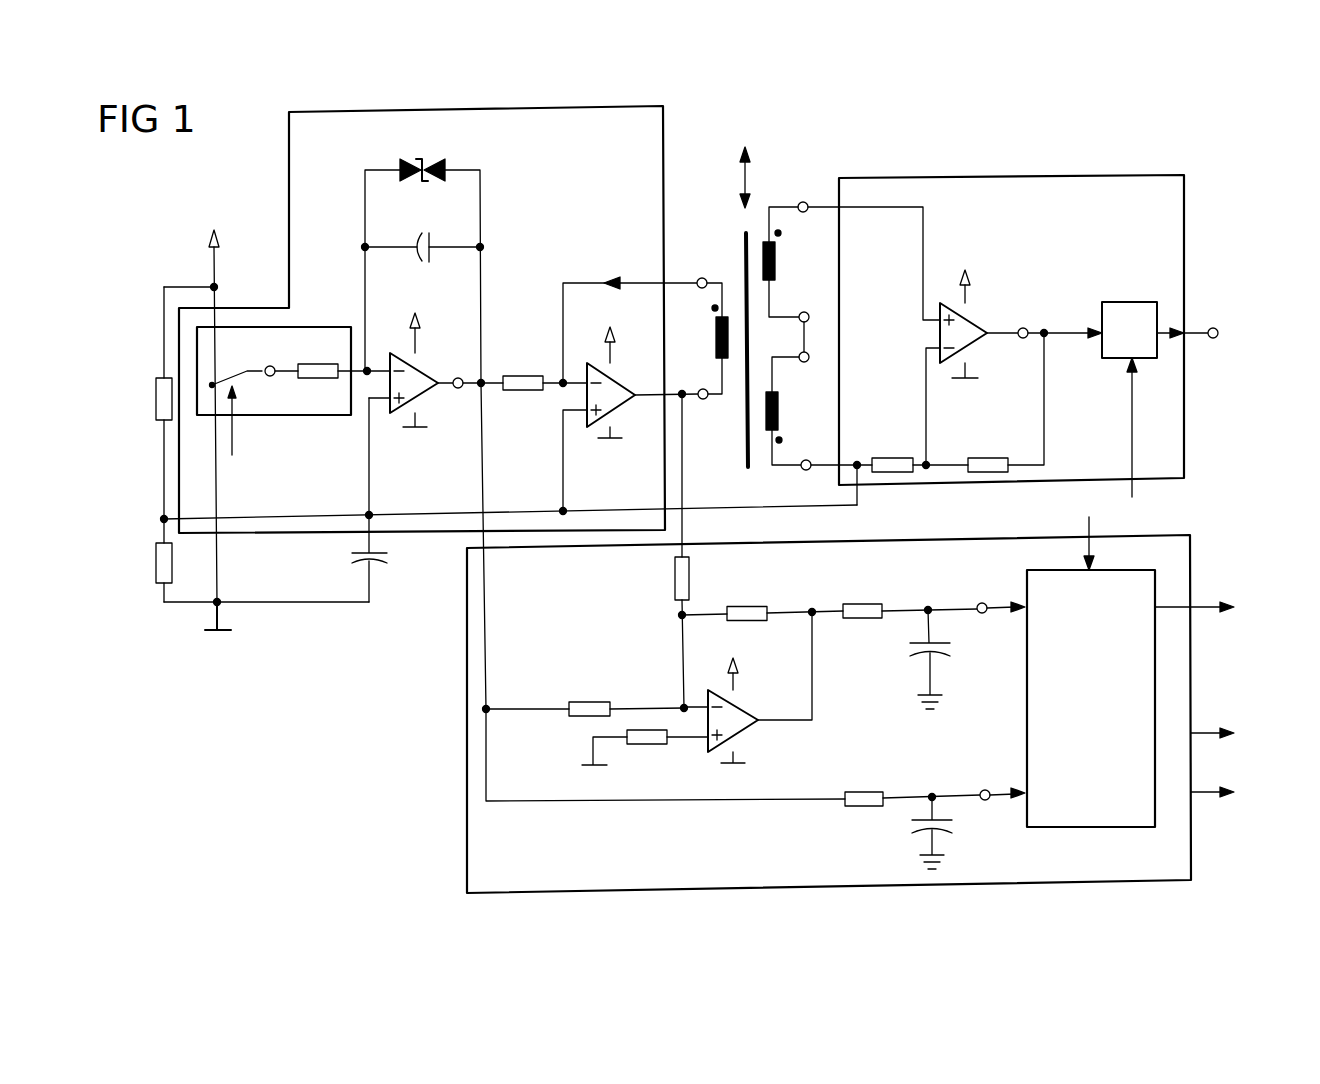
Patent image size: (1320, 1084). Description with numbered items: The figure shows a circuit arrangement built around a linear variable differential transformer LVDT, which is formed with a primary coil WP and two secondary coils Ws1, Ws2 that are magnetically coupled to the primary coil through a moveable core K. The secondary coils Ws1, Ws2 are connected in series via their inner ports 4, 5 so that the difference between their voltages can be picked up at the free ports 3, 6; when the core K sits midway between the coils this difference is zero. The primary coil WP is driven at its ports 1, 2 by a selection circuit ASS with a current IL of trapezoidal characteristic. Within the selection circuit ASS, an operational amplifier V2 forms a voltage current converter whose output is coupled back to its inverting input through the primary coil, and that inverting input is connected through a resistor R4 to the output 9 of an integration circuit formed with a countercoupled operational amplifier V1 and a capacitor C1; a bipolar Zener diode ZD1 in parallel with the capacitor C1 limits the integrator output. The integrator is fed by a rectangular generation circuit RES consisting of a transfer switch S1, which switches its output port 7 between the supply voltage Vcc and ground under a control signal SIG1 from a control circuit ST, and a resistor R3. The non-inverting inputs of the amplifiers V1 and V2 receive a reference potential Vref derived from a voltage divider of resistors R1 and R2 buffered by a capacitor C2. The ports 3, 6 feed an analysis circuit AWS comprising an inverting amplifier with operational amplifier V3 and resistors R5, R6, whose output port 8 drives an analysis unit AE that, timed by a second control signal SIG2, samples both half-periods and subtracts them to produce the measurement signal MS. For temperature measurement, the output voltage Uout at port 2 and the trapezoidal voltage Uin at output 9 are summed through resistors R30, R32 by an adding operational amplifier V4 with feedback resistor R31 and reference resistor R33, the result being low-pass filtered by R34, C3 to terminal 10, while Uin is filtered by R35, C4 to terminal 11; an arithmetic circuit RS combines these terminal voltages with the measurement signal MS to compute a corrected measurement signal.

The primary coil port 1 is at (708, 284).
The primary coil port 2 is at (709, 378).
The free port of first secondary coil 3 is at (854, 248).
The secondary coil port 4 is at (804, 321).
The secondary coil port 5 is at (792, 374).
The free port of second secondary coil 6 is at (836, 482).
The output port of transfer switch 7 is at (281, 356).
The output port of operational amplifier V3 8 is at (1059, 319).
The output of integration circuit 9 is at (477, 368).
The terminal 10 is at (997, 596).
The terminal 11 is at (999, 783).
The selection circuit ASS is at (289, 168).
The analysis circuit AWS is at (1010, 175).
The rectangular generation circuit RES is at (309, 429).
The control circuit ST is at (467, 720).
The linear variable differential transformer LVDT is at (778, 158).
The primary coil WP is at (717, 347).
The first secondary coil Ws1 is at (776, 269).
The second secondary coil Ws2 is at (780, 399).
The core K is at (745, 447).
The resistor R1 is at (156, 399).
The resistor R2 is at (156, 563).
The resistor R3 is at (316, 362).
The resistor R4 is at (524, 369).
The resistor R5 is at (896, 454).
The resistor R6 is at (985, 454).
The resistor R30 is at (674, 578).
The resistor R31 is at (746, 603).
The resistor R32 is at (591, 700).
The resistor R33 is at (644, 746).
The resistor of first low-pass circuit R34 is at (863, 602).
The resistor of second low-pass circuit R35 is at (863, 790).
The capacitor C1 is at (435, 240).
The buffer capacitor C2 is at (372, 570).
The capacitor of first low-pass circuit C3 is at (912, 649).
The capacitor of second low-pass circuit C4 is at (912, 827).
The bipolar Zener diode ZD1 is at (448, 160).
The operational amplifier V1 is at (425, 400).
The operational amplifier V2 is at (626, 382).
The operational amplifier V3 is at (977, 320).
The adding operational amplifier V4 is at (744, 707).
The transfer switch S1 is at (236, 362).
The analysis unit AE is at (1155, 330).
The arithmetic circuit RS is at (1091, 698).
The measurement signal MS is at (1175, 471).
The control signal SIG1 is at (759, 566).
The second control signal SIG2 is at (1199, 581).
The current IL is at (630, 318).
The supply voltage Vcc is at (266, 416).
The reference potential Vref is at (429, 513).
The trapezoidal voltage Uin is at (501, 546).
The output voltage of current voltage converter Uout is at (821, 500).